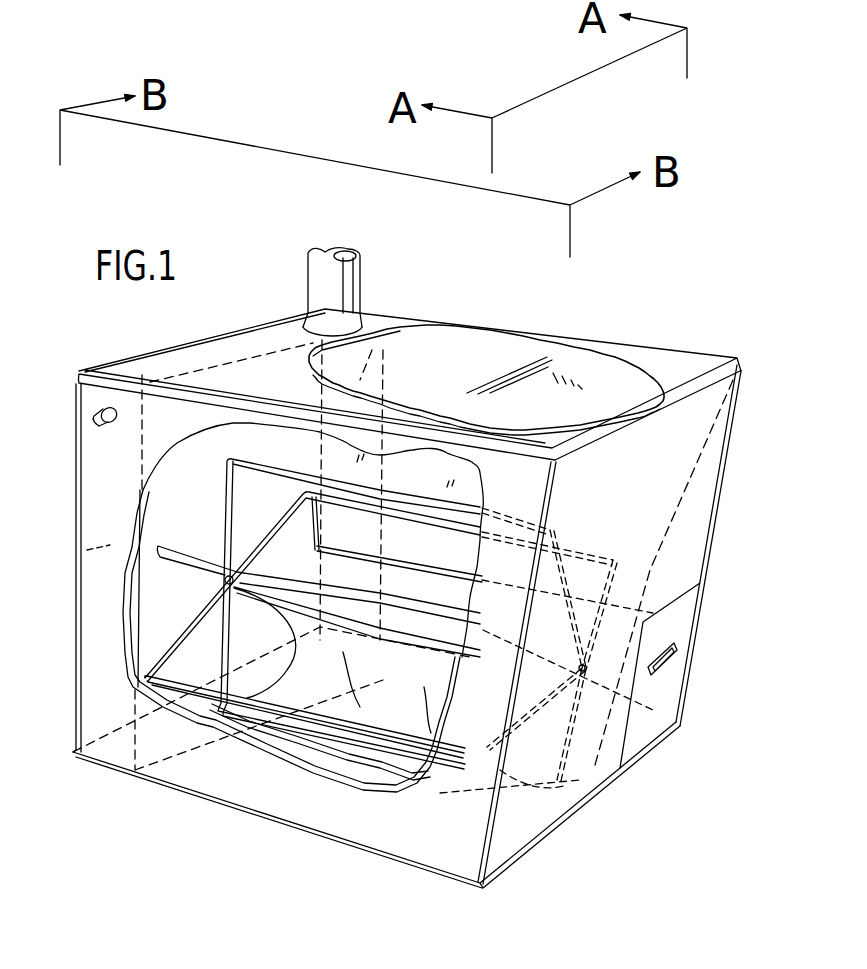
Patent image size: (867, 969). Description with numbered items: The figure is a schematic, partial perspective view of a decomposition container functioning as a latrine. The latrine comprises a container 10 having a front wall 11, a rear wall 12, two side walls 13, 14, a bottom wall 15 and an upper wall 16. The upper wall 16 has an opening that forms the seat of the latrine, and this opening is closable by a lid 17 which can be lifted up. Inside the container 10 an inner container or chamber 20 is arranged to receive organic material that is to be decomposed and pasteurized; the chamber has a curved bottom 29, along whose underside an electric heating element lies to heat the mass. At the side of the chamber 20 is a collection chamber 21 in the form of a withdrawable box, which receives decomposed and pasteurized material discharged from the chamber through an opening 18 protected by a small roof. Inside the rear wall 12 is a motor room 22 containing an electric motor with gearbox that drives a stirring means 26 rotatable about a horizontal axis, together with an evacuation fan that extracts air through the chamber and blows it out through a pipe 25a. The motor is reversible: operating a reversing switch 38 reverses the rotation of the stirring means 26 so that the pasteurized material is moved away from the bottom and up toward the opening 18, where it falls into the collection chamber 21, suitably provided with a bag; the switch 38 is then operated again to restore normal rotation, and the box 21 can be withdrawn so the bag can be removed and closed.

The container 10 is at (410, 616).
The front wall 11 is at (707, 490).
The rear wall 12 is at (78, 553).
The side wall 13 is at (688, 427).
The side wall 14 is at (430, 857).
The bottom wall 15 is at (512, 855).
The upper wall 16 is at (668, 357).
The lid 17 is at (493, 340).
The opening 18 is at (422, 553).
The inner container or chamber 20 is at (263, 640).
The collection chamber 21 is at (684, 618).
The motor room 22 is at (148, 600).
The pipe 25a is at (360, 273).
The stirring means 26 is at (417, 646).
The curved bottom 29 is at (393, 730).
The reversing switch 38 is at (100, 427).